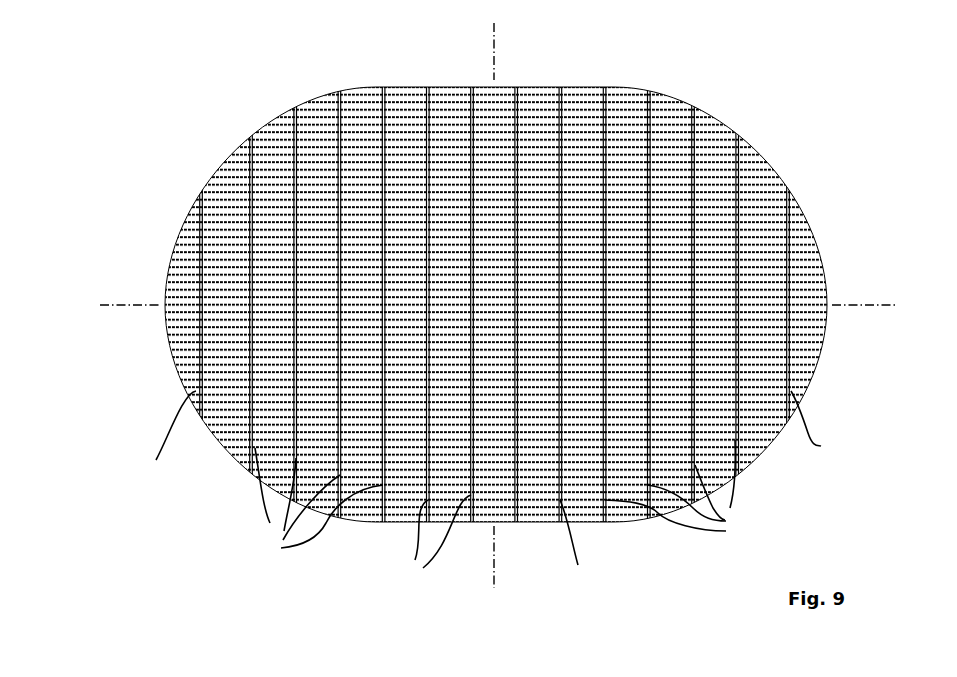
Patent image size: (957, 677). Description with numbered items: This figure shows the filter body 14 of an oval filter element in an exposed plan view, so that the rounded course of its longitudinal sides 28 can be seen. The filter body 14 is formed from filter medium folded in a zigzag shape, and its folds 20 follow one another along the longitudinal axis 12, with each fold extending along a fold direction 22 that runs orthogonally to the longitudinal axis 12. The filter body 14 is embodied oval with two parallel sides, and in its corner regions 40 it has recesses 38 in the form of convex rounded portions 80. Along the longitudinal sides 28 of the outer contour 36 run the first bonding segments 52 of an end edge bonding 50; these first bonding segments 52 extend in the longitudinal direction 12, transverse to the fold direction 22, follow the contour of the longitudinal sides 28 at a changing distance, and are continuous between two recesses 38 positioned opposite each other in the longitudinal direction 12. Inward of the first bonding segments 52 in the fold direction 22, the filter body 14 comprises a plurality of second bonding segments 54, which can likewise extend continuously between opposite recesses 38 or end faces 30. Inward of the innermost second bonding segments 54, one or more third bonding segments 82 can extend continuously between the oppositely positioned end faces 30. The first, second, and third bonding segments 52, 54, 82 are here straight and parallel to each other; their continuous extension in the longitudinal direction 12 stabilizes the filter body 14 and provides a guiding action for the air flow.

The longitudinal axis 12 is at (483, 42).
The filter body 14 is at (495, 306).
The folds 20 is at (345, 140).
The fold direction 22 is at (120, 297).
The longitudinal sides 28 is at (810, 255).
The end faces 30 is at (538, 79).
The outer contour 36 is at (493, 306).
The recesses 38 is at (493, 306).
The corner regions 40 is at (493, 306).
The convex rounded portions 80 is at (493, 306).
The end edge bonding 50 is at (493, 306).
The first bonding segments 52 is at (487, 433).
The second bonding segments 54 is at (503, 496).
The third bonding segments 82 is at (500, 542).